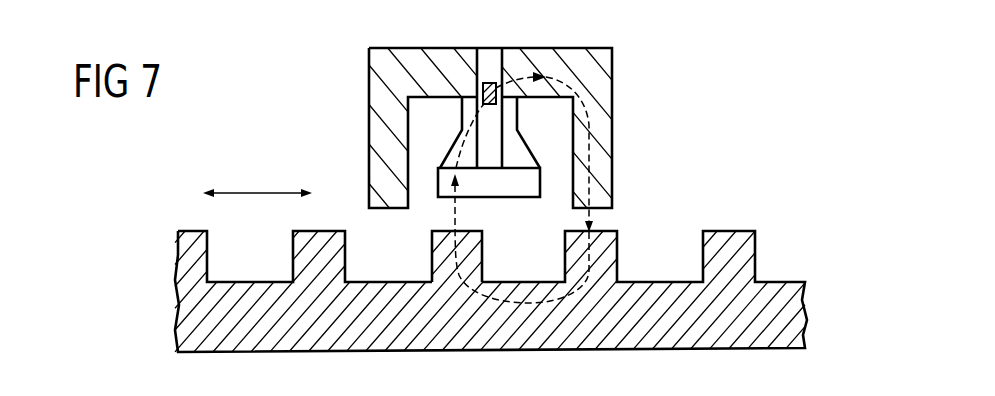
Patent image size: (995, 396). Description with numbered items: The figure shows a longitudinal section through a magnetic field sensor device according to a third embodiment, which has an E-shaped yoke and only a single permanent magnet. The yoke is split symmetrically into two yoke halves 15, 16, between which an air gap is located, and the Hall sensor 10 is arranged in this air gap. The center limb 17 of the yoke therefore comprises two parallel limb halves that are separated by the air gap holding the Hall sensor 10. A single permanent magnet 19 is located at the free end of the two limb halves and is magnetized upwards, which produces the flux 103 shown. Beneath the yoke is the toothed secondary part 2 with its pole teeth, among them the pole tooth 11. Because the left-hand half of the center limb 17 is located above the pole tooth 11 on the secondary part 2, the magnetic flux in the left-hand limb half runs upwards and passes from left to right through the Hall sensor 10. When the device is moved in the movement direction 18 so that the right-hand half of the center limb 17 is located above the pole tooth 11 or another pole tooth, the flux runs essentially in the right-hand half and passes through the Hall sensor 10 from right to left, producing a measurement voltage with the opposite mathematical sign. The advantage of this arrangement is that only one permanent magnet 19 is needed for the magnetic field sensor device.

The secondary part 2 is at (641, 246).
The Hall sensor 10 is at (492, 82).
The pole tooth 11 is at (432, 250).
The yoke half 15 is at (370, 80).
The yoke half 16 is at (612, 65).
The center limb 17 is at (534, 140).
The movement direction 18 is at (257, 192).
The permanent magnet 19 is at (498, 188).
The flux 103 is at (589, 117).